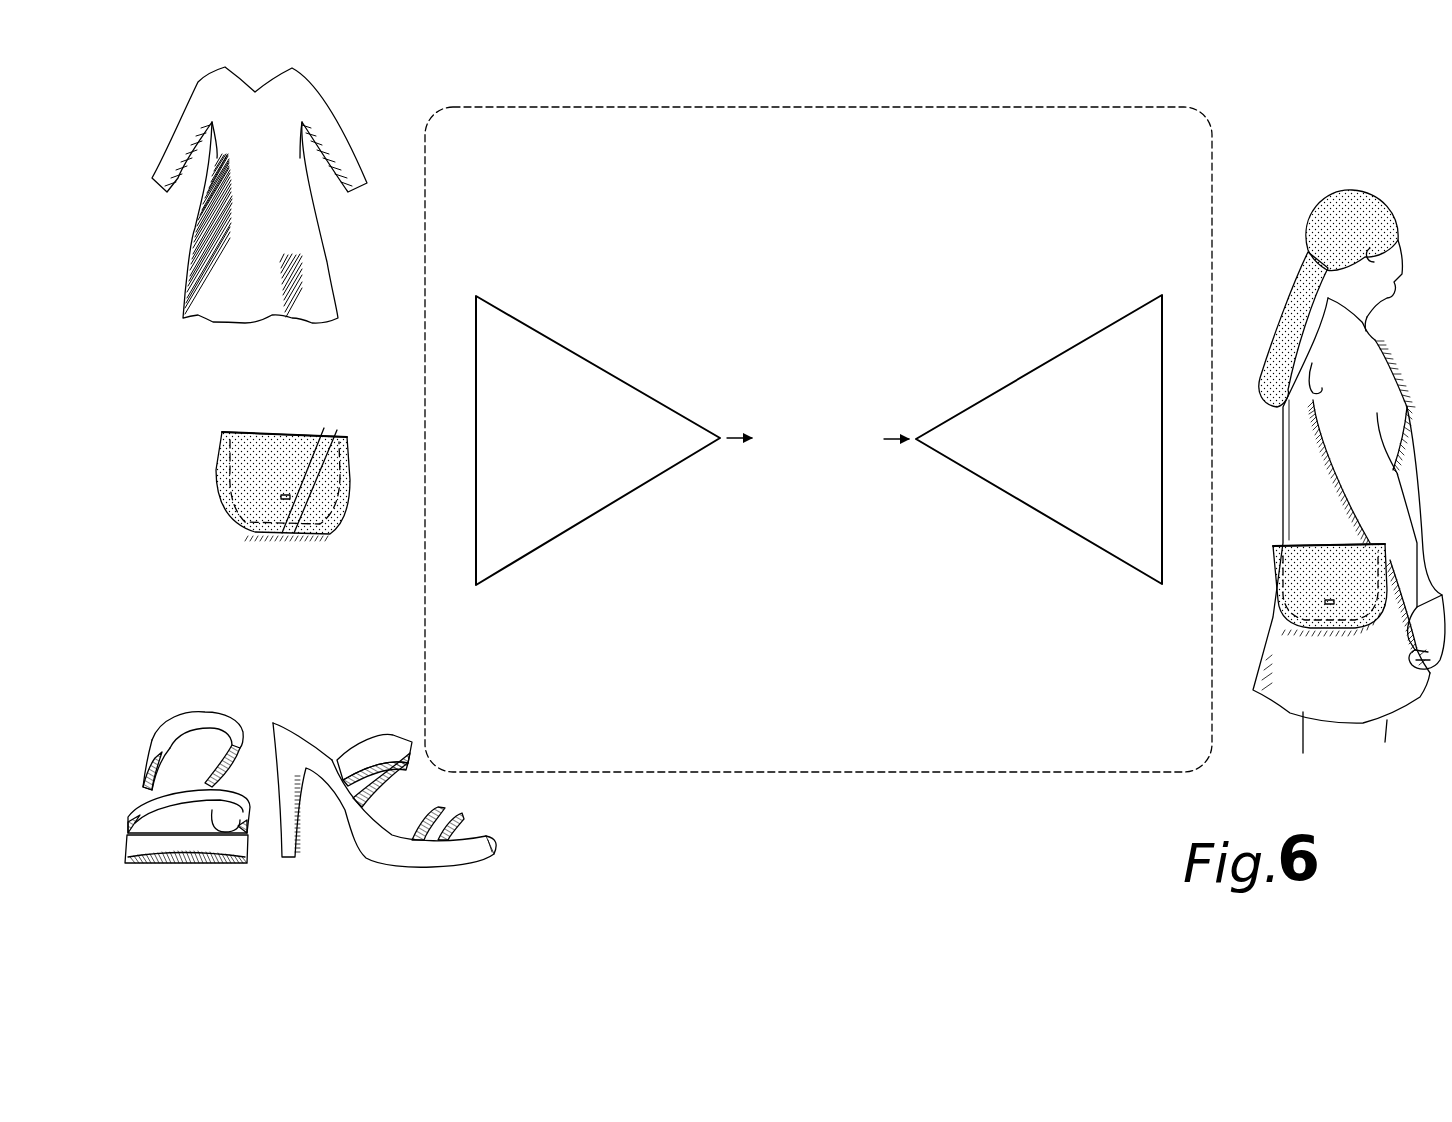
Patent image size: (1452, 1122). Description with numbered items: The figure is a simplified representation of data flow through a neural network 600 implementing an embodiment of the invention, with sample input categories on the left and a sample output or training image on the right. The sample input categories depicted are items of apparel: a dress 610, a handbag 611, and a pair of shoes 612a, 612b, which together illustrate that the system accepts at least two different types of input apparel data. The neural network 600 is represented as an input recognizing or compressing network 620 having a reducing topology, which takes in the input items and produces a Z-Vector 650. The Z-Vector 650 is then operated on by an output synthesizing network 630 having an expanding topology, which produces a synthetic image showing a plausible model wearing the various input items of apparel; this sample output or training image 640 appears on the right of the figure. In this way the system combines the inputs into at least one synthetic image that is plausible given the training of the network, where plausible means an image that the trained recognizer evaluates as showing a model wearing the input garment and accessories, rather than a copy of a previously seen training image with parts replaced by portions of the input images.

The neural network 600 is at (1148, 730).
The dress image 610 is at (368, 90).
The bag image 611 is at (221, 404).
The first shoe image 612a is at (184, 702).
The second shoe image 612b is at (509, 824).
The input recognizing network 620 is at (626, 354).
The output synthesizing network 630 is at (1005, 378).
The output image of person 640 is at (1374, 185).
The Z-Vector 650 is at (858, 461).